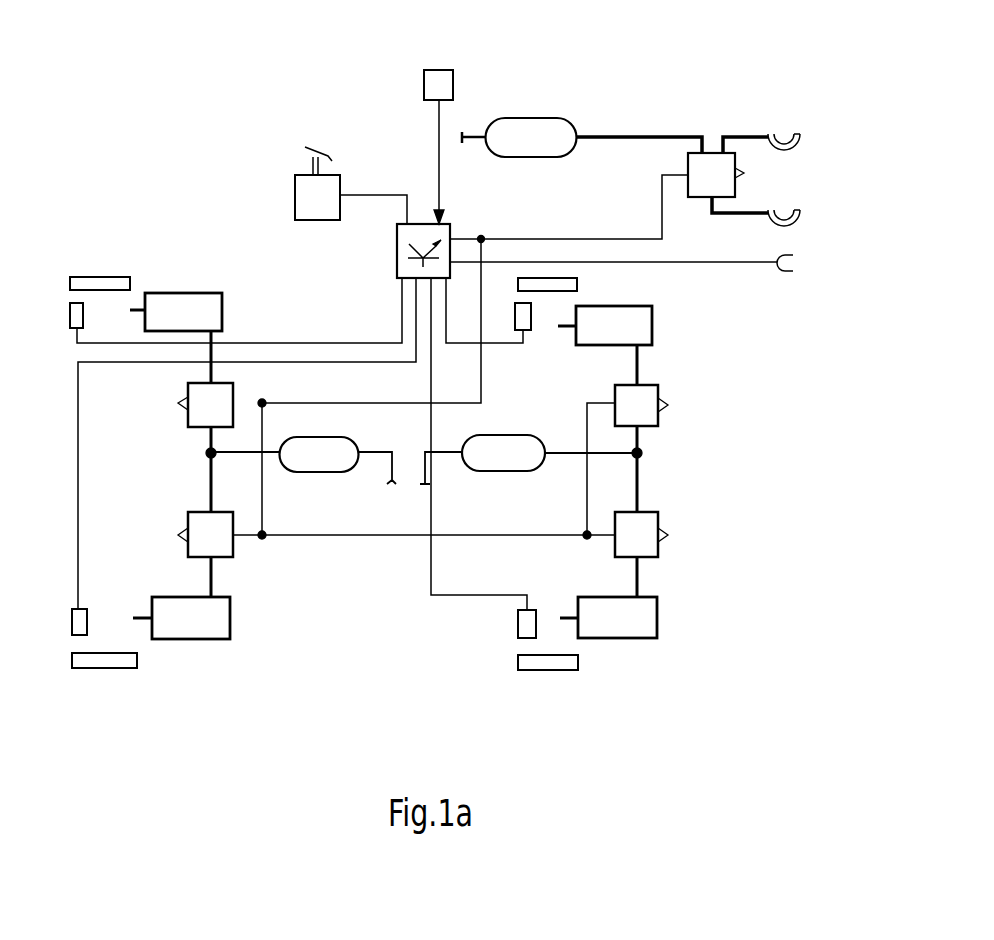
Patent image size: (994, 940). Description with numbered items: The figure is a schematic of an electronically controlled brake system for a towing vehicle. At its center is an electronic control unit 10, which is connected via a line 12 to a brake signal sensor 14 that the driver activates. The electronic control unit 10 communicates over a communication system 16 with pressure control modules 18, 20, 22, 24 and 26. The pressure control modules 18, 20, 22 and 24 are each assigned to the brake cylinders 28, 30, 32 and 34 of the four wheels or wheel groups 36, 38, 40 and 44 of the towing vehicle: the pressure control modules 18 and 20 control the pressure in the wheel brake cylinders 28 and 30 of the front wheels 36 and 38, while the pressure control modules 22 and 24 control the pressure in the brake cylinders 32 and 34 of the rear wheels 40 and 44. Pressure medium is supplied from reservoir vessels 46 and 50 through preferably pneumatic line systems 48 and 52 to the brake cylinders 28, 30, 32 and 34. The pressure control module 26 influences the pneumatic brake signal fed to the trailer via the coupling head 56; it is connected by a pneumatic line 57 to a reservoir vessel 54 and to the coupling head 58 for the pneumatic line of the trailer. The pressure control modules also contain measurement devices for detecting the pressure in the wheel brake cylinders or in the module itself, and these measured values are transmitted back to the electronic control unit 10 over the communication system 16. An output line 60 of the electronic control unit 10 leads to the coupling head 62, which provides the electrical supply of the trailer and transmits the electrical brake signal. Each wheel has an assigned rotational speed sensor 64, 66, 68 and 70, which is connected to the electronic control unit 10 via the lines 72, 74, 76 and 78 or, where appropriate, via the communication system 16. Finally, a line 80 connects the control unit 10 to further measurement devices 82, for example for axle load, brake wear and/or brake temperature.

The electronic control unit 10 is at (450, 224).
The line 12 is at (372, 195).
The brake signal sensor 14 is at (323, 150).
The communication system 16 is at (545, 239).
The pressure control module 18 is at (233, 388).
The pressure control module 20 is at (232, 557).
The pressure control module 22 is at (658, 390).
The pressure control module 24 is at (658, 520).
The pressure control module 26 is at (735, 193).
The brake cylinder 28 is at (218, 293).
The brake cylinder 30 is at (222, 639).
The brake cylinder 32 is at (652, 315).
The brake cylinder 34 is at (650, 638).
The front wheel 36 is at (130, 277).
The front wheel 38 is at (125, 668).
The rear wheel 40 is at (577, 284).
The rear wheel 44 is at (575, 670).
The reservoir vessel 46 is at (306, 472).
The line system 48 is at (282, 448).
The reservoir vessel 50 is at (515, 471).
The line system 52 is at (563, 450).
The reservoir vessel 54 is at (520, 118).
The coupling head 56 is at (800, 209).
The pneumatic line 57 is at (677, 137).
The coupling head 58 is at (753, 137).
The output line 60 is at (722, 262).
The coupling head 62 is at (791, 276).
The rotational speed sensor 64 is at (67, 318).
The rotational speed sensor 66 is at (87, 609).
The rotational speed sensor 68 is at (518, 620).
The rotational speed sensor 70 is at (531, 330).
The line 72 is at (93, 343).
The line 74 is at (78, 455).
The line 76 is at (432, 517).
The line 78 is at (448, 322).
The line 80 is at (438, 118).
The measurement devices 82 is at (450, 70).